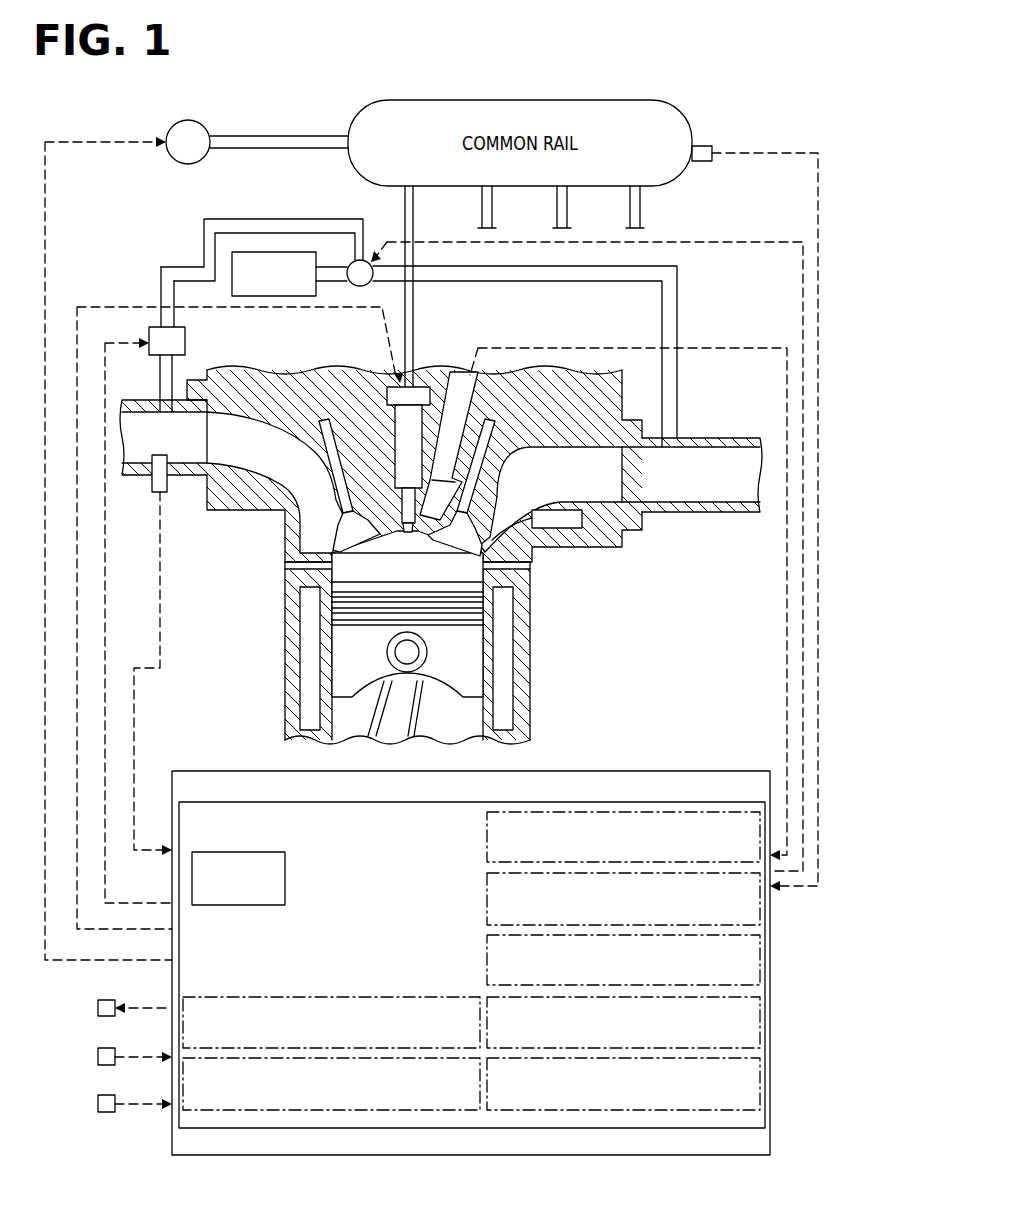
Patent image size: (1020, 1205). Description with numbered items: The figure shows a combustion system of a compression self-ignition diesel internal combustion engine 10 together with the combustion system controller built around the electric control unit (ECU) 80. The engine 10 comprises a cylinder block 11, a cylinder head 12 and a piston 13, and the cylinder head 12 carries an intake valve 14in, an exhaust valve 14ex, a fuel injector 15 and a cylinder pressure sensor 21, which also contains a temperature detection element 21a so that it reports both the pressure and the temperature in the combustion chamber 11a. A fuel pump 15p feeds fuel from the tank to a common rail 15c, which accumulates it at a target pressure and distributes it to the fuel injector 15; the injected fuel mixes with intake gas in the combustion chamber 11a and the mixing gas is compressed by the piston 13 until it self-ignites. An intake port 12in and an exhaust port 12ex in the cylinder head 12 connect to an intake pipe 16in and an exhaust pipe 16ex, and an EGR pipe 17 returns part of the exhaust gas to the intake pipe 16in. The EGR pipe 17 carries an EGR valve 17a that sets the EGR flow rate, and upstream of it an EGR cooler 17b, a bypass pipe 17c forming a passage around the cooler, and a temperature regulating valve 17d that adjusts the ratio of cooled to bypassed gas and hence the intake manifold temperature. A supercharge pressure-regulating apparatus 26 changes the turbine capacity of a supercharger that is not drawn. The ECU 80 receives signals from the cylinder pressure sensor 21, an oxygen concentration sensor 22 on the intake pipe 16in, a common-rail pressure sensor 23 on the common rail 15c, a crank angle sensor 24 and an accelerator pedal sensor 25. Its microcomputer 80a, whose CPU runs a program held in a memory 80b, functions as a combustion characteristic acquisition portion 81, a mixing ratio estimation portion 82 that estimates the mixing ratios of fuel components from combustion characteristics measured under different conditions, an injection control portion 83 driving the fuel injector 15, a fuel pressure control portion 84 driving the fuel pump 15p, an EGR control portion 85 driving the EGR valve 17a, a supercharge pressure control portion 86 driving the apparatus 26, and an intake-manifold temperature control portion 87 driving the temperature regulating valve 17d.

The internal combustion engine 10 is at (436, 525).
The cylinder block 11 is at (287, 624).
The combustion chamber 11a is at (357, 572).
The cylinder head 12 is at (414, 480).
The intake port 12in is at (282, 457).
The exhaust port 12ex is at (562, 490).
The piston 13 is at (353, 655).
The intake valve 14in is at (310, 445).
The exhaust valve 14ex is at (545, 445).
The fuel injector 15 is at (385, 440).
The common rail 15c is at (348, 156).
The fuel pump 15p is at (173, 165).
The intake pipe 16in is at (133, 480).
The exhaust pipe 16ex is at (736, 514).
The EGR pipe 17 is at (678, 302).
The EGR valve 17a is at (187, 340).
The EGR cooler 17b is at (246, 252).
The bypass pipe 17c is at (204, 243).
The temperature regulating valve 17d is at (352, 261).
The cylinder pressure sensor 21 is at (460, 416).
The temperature detection element 21a is at (445, 372).
The oxygen concentration sensor 22 is at (170, 493).
The common-rail pressure sensor 23 is at (706, 163).
The crank angle sensor 24 is at (97, 1057).
The accelerator pedal sensor 25 is at (97, 1104).
The supercharge pressure-regulating apparatus 26 is at (97, 1008).
The electric control unit (ECU) 80 is at (195, 771).
The microcomputer 80a is at (262, 802).
The memory 80b is at (286, 880).
The combustion characteristic acquisition portion 81 is at (487, 842).
The mixing ratio estimation portion 82 is at (487, 902).
The injection control portion 83 is at (487, 962).
The fuel pressure control portion 84 is at (760, 1025).
The EGR control portion 85 is at (760, 1085).
The supercharge pressure control portion 86 is at (183, 1025).
The intake-manifold temperature control portion 87 is at (183, 1085).